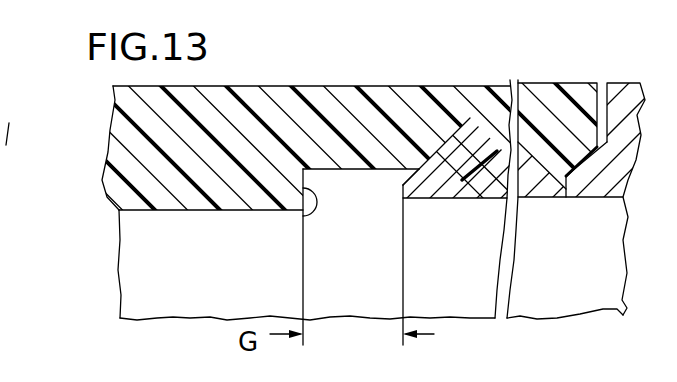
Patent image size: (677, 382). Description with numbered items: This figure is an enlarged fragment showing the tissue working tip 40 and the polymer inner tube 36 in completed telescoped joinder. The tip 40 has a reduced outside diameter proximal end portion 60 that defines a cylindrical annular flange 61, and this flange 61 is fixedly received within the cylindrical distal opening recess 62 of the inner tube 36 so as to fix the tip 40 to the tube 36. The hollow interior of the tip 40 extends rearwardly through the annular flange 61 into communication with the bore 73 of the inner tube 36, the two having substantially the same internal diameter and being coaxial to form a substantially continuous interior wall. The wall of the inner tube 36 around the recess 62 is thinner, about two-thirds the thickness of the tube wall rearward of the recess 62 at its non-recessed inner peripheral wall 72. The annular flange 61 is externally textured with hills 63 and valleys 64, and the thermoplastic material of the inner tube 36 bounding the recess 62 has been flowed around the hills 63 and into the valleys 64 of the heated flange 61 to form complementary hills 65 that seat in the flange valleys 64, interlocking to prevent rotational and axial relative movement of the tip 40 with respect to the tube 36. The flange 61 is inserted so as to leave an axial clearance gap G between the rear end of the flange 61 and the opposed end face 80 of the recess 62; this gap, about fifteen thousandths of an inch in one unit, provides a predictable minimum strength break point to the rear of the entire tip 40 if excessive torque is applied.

The inner tube 36 is at (384, 84).
The tissue working tip 40 is at (637, 84).
The proximal end portion 60 is at (428, 218).
The annular flange 61 is at (467, 192).
The distal opening recess 62 is at (348, 171).
The hills 63 is at (462, 168).
The valleys 64 is at (472, 197).
The hills 65 is at (568, 190).
The non-recessed inner peripheral wall 72 is at (167, 212).
The bore 73 is at (122, 262).
The end face 80 is at (303, 216).